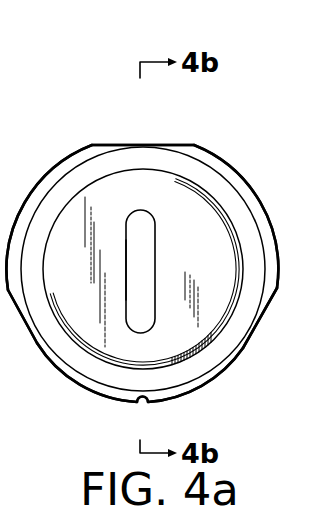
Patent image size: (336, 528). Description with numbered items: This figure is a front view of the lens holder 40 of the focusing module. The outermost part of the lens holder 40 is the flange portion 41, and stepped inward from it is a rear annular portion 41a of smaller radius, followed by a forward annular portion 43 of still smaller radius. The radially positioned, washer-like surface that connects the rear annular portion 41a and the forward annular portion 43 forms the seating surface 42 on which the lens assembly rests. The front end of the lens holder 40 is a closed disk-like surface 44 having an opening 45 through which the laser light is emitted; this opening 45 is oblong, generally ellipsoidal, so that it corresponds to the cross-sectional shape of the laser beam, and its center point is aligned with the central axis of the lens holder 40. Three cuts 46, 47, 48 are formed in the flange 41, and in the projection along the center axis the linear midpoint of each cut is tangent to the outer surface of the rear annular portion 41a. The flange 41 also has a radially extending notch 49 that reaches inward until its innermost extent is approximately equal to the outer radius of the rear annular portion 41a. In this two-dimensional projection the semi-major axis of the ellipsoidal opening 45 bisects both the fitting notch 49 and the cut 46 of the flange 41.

The lens holder 40 is at (185, 132).
The flange portion 41 is at (57, 163).
The rear annular portion 41a is at (95, 391).
The seating surface 42 is at (188, 168).
The forward annular portion 43 is at (206, 193).
The closed disk-like surface 44 is at (204, 232).
The opening 45 is at (151, 252).
The cut 46 is at (152, 110).
The cut 47 is at (37, 342).
The cut 48 is at (240, 349).
The notch 49 is at (145, 402).